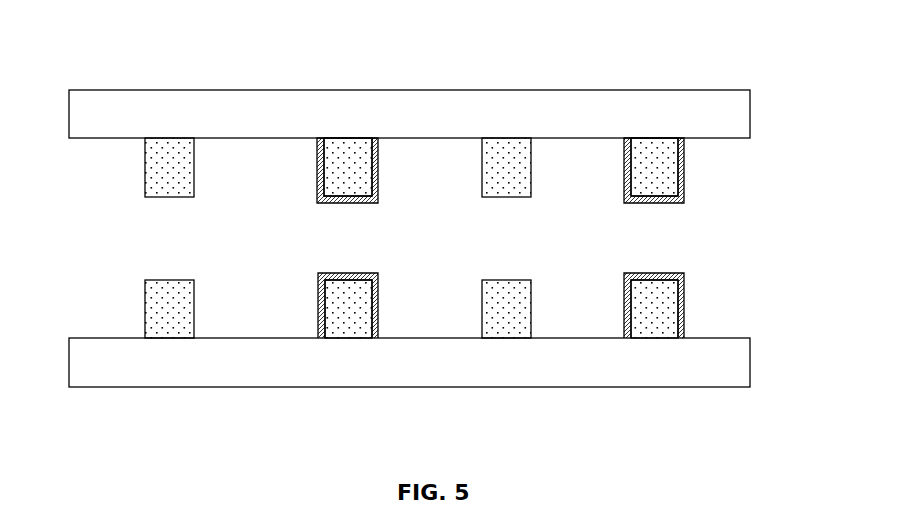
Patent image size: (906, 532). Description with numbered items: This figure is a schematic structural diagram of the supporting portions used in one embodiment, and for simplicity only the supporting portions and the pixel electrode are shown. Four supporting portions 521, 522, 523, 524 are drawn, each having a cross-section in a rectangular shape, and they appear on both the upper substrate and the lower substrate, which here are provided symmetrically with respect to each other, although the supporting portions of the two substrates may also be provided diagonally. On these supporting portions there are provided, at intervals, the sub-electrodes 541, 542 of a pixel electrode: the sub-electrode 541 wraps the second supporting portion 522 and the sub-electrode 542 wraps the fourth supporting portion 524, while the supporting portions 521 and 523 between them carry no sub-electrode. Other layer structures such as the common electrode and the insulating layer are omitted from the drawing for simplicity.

The supporting portion 521 is at (168, 152).
The supporting portion 522 is at (342, 152).
The supporting portion 523 is at (498, 152).
The supporting portion 524 is at (647, 162).
The sub-electrode 541 is at (377, 155).
The sub-electrode 542 is at (683, 152).